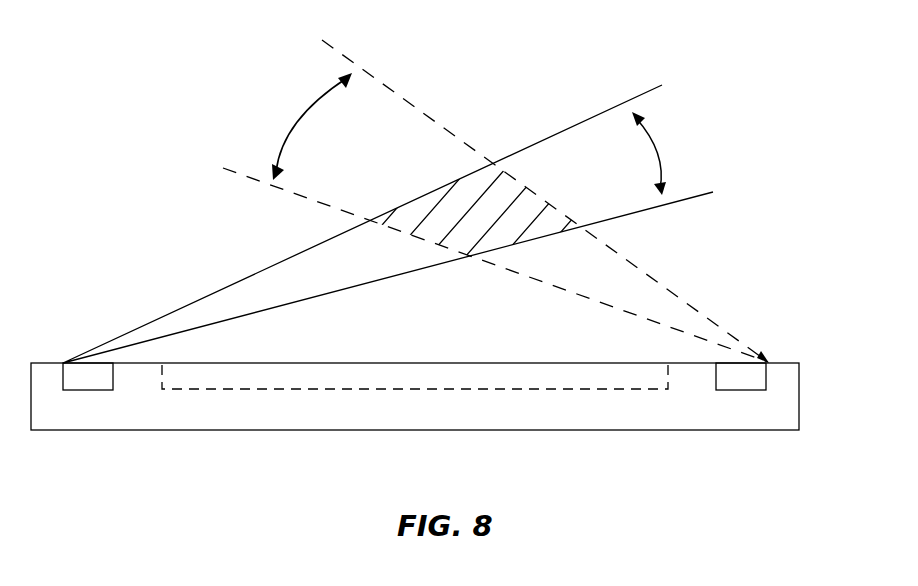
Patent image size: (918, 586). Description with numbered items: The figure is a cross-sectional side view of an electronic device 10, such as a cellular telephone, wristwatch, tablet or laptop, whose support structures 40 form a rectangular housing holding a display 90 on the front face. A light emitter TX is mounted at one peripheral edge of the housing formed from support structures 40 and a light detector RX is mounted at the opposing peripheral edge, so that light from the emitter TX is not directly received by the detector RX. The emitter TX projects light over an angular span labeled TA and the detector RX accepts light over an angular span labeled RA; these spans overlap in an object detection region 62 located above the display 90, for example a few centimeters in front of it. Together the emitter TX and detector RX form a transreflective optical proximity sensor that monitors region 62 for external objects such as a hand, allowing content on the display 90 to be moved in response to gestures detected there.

The electronic device 10 is at (813, 311).
The support structures 40 is at (799, 400).
The object detection region 62 is at (433, 205).
The display 90 is at (288, 392).
The light emitter TX is at (90, 380).
The light detector RX is at (743, 380).
The receive angle RA is at (299, 120).
The transmit angle TA is at (660, 151).